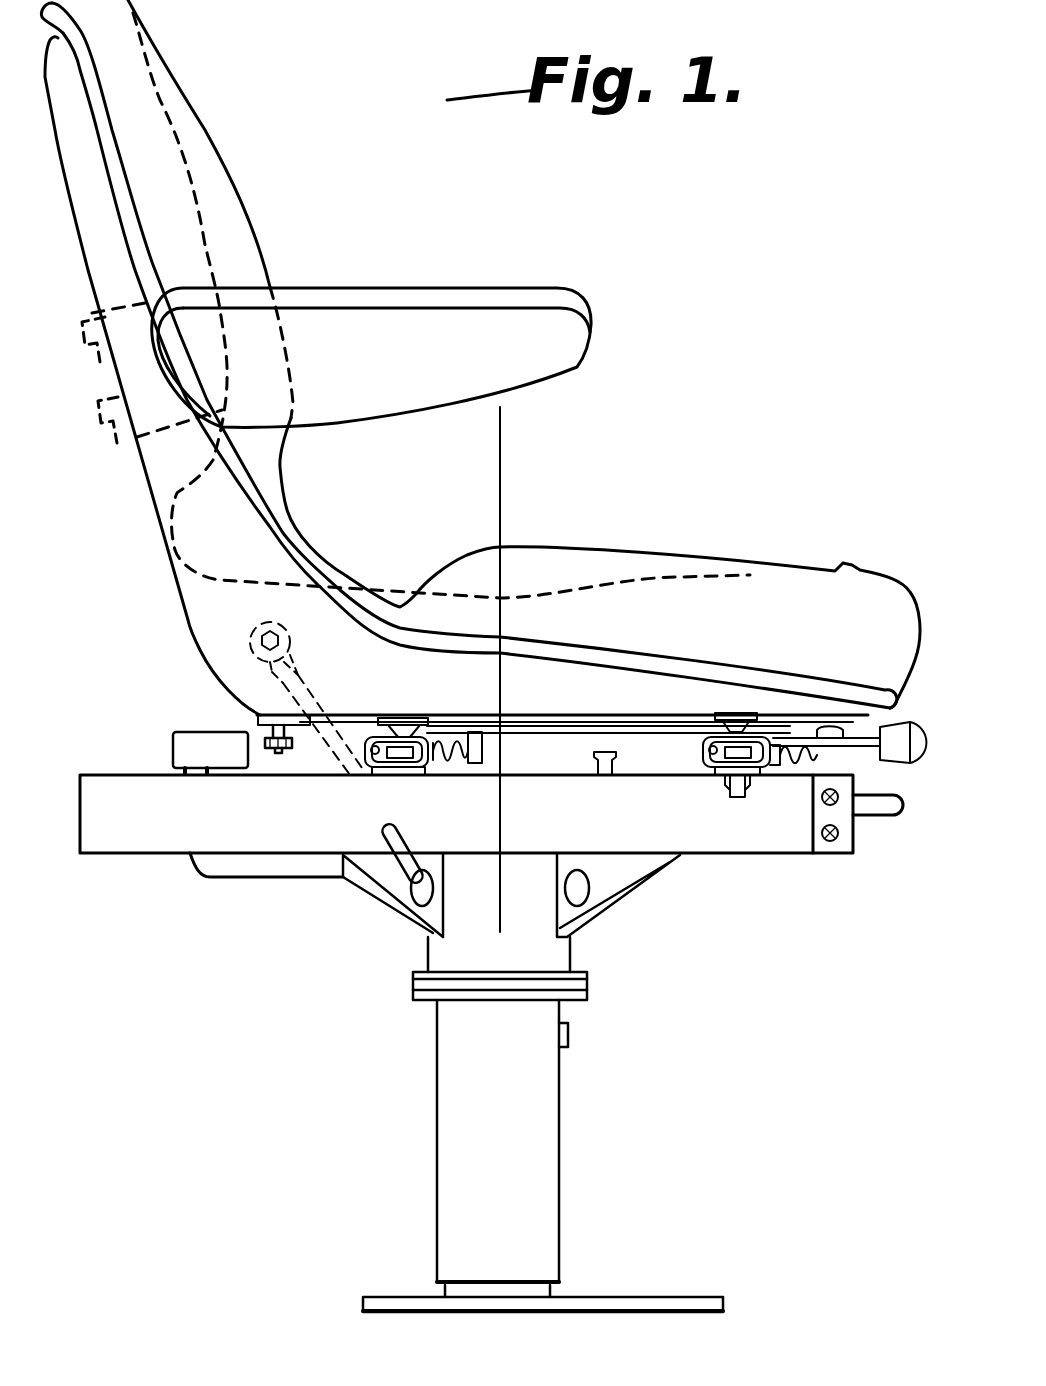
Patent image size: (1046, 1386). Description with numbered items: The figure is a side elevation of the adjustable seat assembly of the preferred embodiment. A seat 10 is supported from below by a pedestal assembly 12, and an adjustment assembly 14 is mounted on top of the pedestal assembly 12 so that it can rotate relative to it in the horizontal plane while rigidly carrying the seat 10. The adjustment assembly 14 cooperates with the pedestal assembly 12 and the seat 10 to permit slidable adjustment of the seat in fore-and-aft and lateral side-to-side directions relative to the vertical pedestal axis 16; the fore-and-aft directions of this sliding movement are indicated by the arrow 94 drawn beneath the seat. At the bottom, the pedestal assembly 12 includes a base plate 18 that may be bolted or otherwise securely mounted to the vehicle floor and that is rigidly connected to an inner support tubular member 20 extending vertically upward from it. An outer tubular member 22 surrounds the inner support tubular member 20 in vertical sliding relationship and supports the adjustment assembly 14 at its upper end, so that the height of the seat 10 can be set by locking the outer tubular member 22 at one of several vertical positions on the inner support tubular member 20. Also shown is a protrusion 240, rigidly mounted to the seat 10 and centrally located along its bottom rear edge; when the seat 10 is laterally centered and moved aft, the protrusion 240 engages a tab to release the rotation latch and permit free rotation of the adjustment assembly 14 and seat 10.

The seat 10 is at (868, 588).
The pedestal assembly 12 is at (570, 1077).
The adjustment assembly 14 is at (870, 842).
The pedestal axis 16 is at (500, 444).
The base plate 18 is at (660, 1297).
The inner support tubular member 20 is at (555, 1295).
The outer tubular member 22 is at (560, 1192).
The arrow indicating fore-and-aft directions 94 is at (787, 842).
The protrusion 240 is at (263, 742).